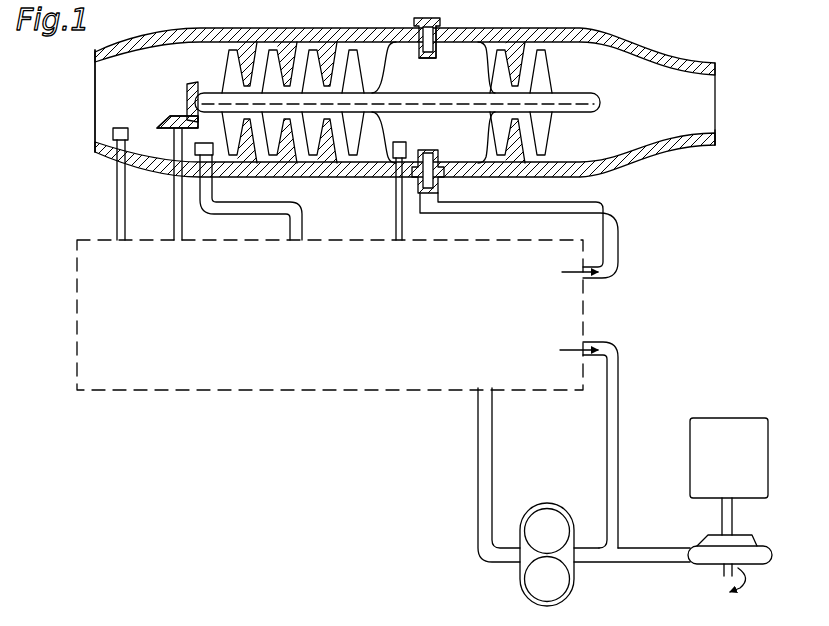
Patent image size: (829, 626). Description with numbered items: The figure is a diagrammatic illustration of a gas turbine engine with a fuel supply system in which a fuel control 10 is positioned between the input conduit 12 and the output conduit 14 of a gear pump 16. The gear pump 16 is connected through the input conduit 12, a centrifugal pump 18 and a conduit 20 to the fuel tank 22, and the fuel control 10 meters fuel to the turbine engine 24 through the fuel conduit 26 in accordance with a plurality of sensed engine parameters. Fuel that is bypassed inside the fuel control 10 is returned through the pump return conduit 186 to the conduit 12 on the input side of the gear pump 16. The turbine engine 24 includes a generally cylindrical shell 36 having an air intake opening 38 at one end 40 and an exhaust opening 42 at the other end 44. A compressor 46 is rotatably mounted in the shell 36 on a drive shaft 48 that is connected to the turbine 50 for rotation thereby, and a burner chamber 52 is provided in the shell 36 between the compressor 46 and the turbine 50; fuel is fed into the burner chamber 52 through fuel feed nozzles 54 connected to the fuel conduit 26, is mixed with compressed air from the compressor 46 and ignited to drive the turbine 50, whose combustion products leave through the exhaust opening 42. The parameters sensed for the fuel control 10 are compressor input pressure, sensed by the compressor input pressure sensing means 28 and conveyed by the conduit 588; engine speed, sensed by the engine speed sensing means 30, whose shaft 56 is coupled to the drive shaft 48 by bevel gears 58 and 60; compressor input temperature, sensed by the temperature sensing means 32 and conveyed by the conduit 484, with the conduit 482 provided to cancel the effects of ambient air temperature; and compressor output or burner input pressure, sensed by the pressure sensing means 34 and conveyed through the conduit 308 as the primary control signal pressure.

The fuel control 10 is at (76, 291).
The input conduit 12 is at (641, 563).
The output conduit 14 is at (478, 530).
The gear pump 16 is at (563, 599).
The centrifugal pump 18 is at (758, 563).
The conduit 20 is at (733, 518).
The fuel tank 22 is at (710, 418).
The turbine engine 24 is at (294, 27).
The fuel conduit 26 is at (620, 234).
The compressor input pressure sensing means 28 is at (113, 134).
The engine speed sensing means 30 is at (163, 114).
The compressor input temperature sensing means 32 is at (213, 153).
The pressure sensing means 34 is at (395, 160).
The cylindrical shell 36 is at (474, 28).
The air intake opening 38 is at (100, 58).
The end 40 is at (96, 97).
The exhaust opening 42 is at (716, 131).
The end 44 is at (716, 92).
The compressor 46 is at (232, 64).
The drive shaft 48 is at (403, 96).
The turbine 50 is at (552, 73).
The burner chamber 52 is at (466, 137).
The fuel feed nozzles 54 is at (437, 46).
The shaft 56 is at (174, 208).
The bevel gear 58 is at (190, 92).
The bevel gear 60 is at (173, 132).
The pump return conduit 186 is at (620, 366).
The conduit 308 is at (395, 222).
The conduit 482 is at (264, 220).
The conduit 484 is at (278, 202).
The conduit 588 is at (117, 225).